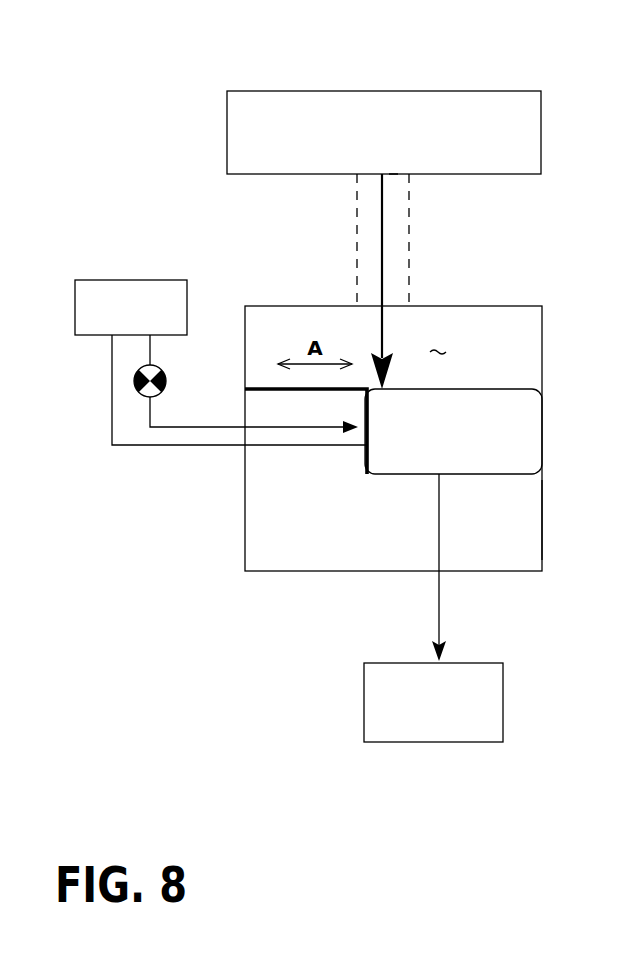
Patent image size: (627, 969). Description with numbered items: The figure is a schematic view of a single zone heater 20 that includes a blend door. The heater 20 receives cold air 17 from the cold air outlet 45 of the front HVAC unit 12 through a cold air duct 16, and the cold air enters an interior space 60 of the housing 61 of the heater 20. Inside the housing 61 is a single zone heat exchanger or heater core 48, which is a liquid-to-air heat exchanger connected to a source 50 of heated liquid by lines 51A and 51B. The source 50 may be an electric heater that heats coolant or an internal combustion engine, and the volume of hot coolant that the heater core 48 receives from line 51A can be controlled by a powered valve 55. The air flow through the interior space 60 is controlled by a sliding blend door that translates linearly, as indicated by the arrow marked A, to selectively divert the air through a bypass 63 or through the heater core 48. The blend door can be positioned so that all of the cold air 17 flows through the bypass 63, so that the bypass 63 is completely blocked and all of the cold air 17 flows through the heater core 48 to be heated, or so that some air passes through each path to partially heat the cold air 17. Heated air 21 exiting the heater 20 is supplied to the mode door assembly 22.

The front HVAC unit 12 is at (363, 91).
The cold air duct 16 is at (410, 259).
The cold air 17 is at (380, 244).
The single zone heater 20 is at (506, 303).
The heated air 21 is at (438, 600).
The mode door assembly 22 is at (433, 742).
The cold air outlet 45 is at (393, 175).
The heater core 48 is at (485, 388).
The source of heated liquid 50 is at (138, 280).
The line 51A is at (195, 427).
The line 51B is at (165, 448).
The powered valve 55 is at (133, 384).
The interior space 60 is at (438, 339).
The housing 61 is at (273, 388).
The bypass 63 is at (232, 630).